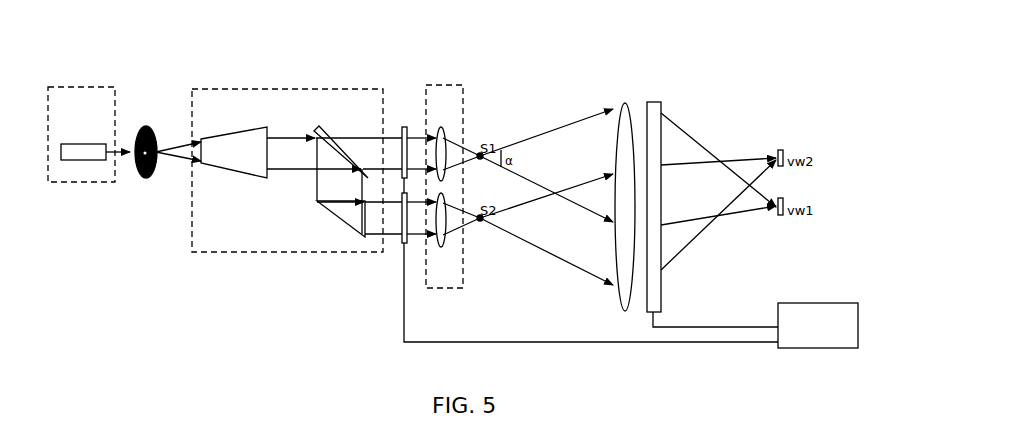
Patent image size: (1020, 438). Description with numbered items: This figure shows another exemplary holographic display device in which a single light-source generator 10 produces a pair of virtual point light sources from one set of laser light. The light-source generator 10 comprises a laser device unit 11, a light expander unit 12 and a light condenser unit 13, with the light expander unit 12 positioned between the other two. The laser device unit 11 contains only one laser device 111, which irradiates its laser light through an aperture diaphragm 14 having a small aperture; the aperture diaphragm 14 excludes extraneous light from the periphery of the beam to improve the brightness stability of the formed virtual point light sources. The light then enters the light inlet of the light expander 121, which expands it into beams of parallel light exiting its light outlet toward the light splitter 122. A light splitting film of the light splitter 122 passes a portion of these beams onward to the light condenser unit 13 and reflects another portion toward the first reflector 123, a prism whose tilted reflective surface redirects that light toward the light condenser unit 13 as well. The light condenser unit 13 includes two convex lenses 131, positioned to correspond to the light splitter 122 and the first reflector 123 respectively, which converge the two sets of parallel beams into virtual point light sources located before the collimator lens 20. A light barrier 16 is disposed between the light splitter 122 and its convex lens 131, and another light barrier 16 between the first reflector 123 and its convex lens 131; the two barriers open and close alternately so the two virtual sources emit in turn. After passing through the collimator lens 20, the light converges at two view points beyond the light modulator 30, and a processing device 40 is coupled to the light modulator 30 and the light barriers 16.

The light-source generator 10 is at (453, 48).
The laser device unit 11 is at (85, 86).
The laser device 111 is at (72, 146).
The aperture diaphragm 14 is at (143, 127).
The light expander unit 12 is at (303, 88).
The light expander 121 is at (235, 130).
The light splitter 122 is at (328, 128).
The first reflector 123 is at (333, 218).
The light barrier 16 is at (404, 127).
The light condenser unit 13 is at (435, 85).
The convex lens 131 is at (443, 127).
The collimator lens 20 is at (628, 101).
The light modulator 30 is at (651, 102).
The processing device 40 is at (858, 332).